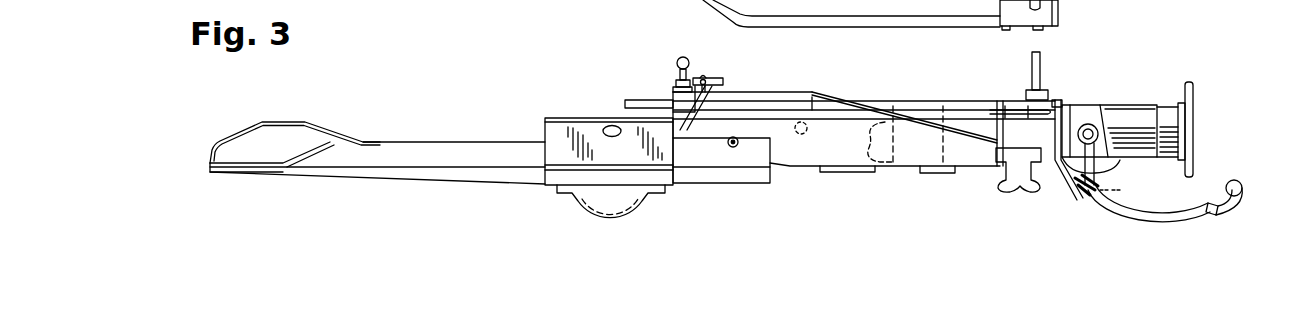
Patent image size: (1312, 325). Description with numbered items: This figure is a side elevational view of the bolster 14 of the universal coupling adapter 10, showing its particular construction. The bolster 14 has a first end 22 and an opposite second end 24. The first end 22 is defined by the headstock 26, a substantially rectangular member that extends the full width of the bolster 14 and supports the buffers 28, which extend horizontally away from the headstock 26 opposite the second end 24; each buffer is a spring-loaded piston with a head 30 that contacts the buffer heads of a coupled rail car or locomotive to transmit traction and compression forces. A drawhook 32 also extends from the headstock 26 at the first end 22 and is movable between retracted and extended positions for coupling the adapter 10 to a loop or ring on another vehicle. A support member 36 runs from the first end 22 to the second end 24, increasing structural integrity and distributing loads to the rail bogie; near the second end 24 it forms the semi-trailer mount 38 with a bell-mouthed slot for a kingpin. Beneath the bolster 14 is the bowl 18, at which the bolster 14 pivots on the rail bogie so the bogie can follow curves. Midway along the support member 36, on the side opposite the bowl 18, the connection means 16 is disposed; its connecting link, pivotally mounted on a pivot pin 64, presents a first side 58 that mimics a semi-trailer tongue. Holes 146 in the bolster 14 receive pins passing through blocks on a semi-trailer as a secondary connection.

The universal coupling adapter 10 is at (490, 74).
The bolster 14 is at (526, 186).
The connection means 16 is at (660, 88).
The bowl 18 is at (646, 196).
The first end 22 is at (975, 95).
The second end 24 is at (310, 182).
The headstock 26 is at (1058, 99).
The buffers 28 is at (1124, 105).
The head 30 is at (1197, 114).
The drawhook 32 is at (1118, 166).
The support member 36 is at (475, 141).
The semi-trailer mount 38 is at (278, 121).
The first side 58 is at (637, 99).
The pivot pin 64 is at (691, 81).
The holes 146 is at (604, 127).